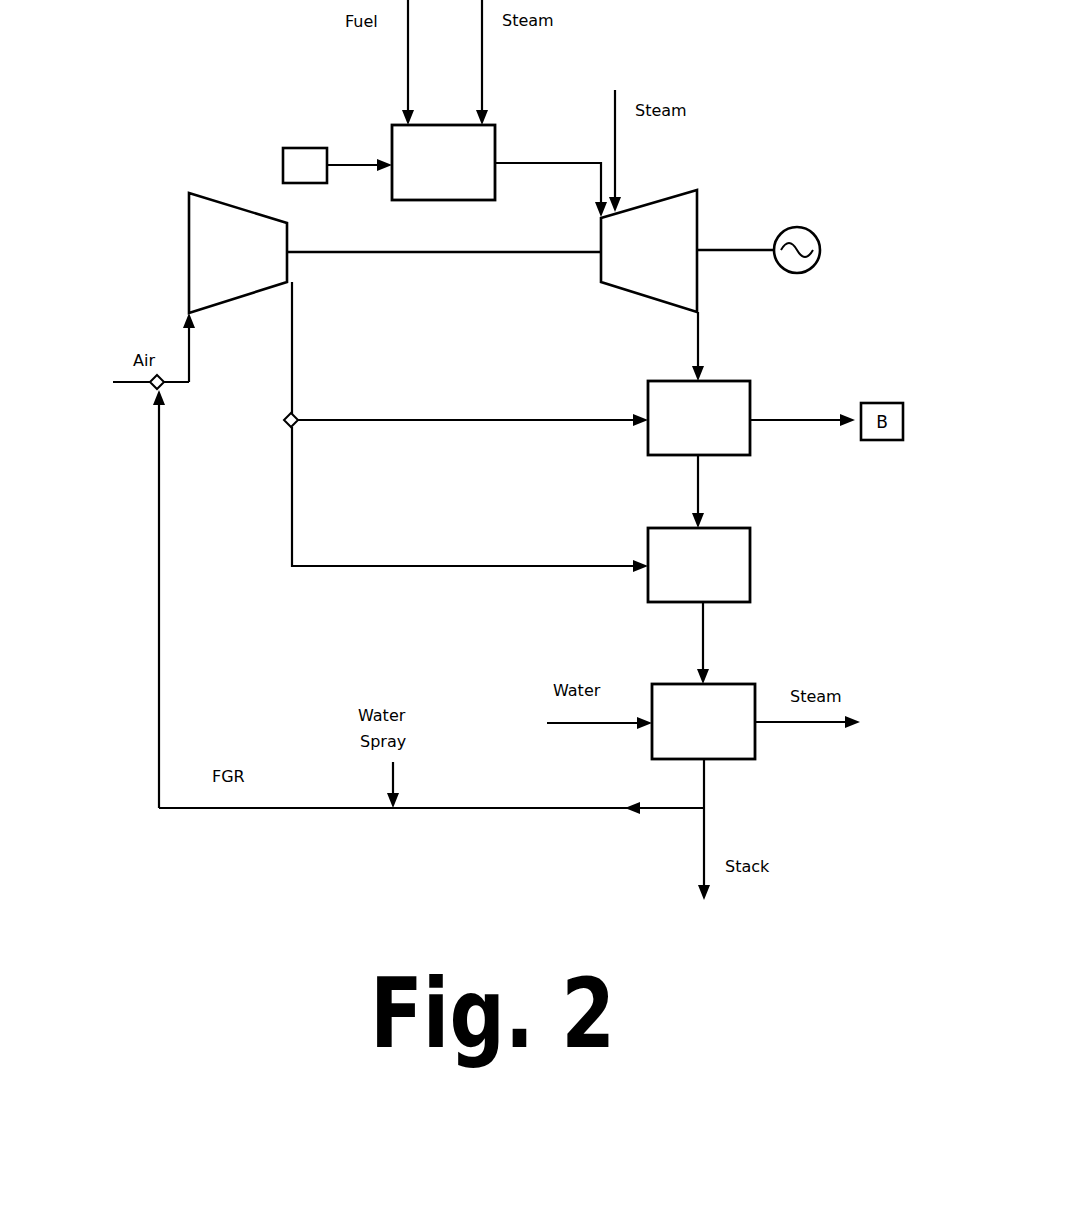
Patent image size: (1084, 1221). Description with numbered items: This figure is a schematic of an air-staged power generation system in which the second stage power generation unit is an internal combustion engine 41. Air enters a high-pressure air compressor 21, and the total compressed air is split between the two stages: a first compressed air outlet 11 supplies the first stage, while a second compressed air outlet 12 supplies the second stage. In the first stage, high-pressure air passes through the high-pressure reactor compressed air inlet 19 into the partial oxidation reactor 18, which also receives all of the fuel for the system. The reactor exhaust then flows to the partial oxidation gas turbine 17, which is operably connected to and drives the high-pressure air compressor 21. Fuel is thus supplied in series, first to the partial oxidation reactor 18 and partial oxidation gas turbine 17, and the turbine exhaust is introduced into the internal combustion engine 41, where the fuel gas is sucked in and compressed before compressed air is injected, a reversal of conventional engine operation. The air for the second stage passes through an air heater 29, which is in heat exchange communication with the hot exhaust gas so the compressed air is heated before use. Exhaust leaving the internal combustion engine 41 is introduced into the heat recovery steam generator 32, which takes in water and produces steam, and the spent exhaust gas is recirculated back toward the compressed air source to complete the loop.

The first compressed air outlet 11 is at (297, 414).
The second compressed air outlet 12 is at (297, 427).
The partial oxidation gas turbine 17 is at (697, 207).
The partial oxidation reactor 18 is at (495, 137).
The high-pressure reactor compressed air inlet 19 is at (390, 155).
The high-pressure air compressor 21 is at (223, 203).
The air heater 29 is at (750, 392).
The heat recovery steam generator 32 is at (755, 742).
The internal combustion engine 41 is at (750, 548).